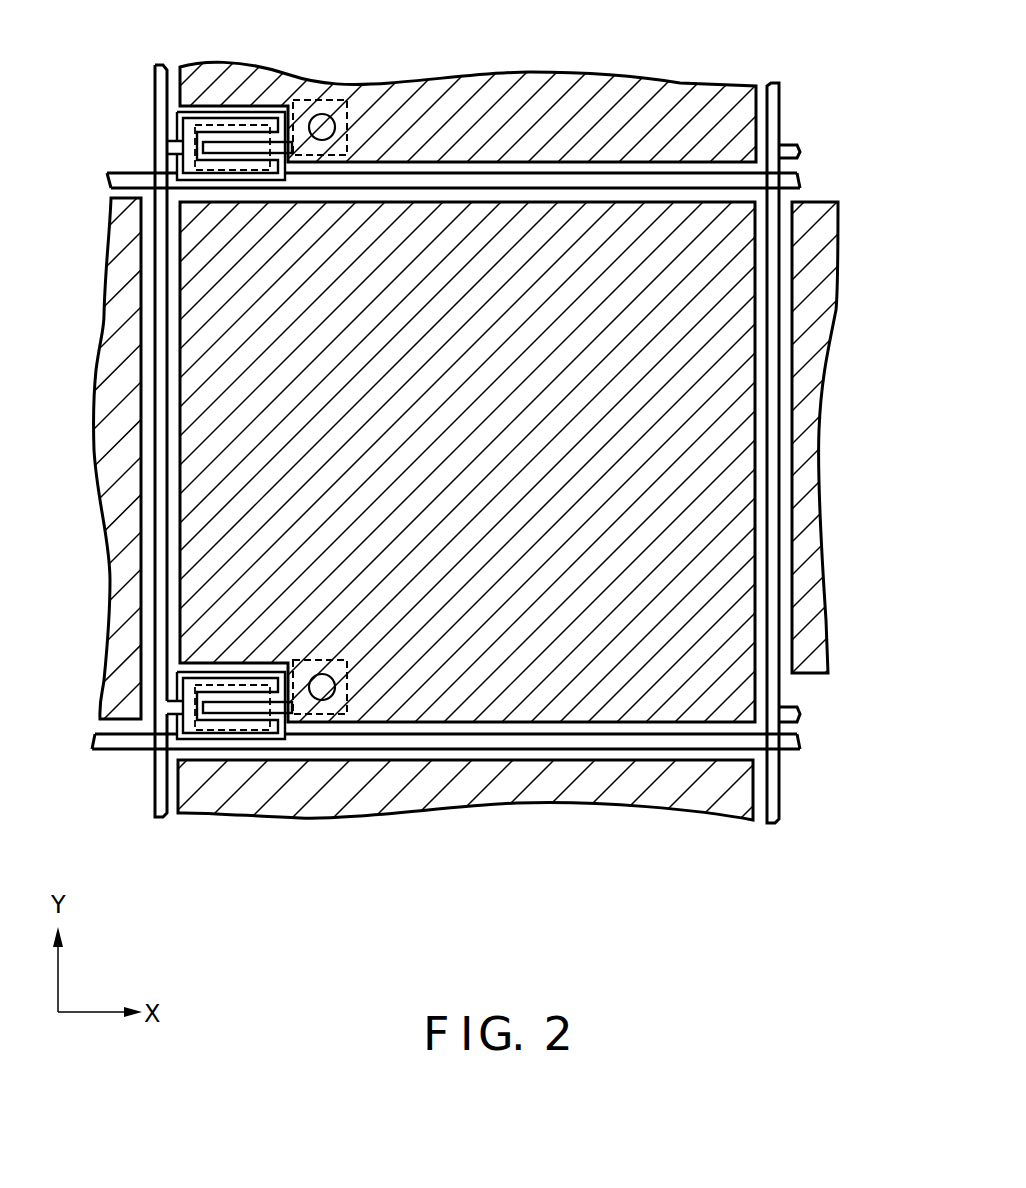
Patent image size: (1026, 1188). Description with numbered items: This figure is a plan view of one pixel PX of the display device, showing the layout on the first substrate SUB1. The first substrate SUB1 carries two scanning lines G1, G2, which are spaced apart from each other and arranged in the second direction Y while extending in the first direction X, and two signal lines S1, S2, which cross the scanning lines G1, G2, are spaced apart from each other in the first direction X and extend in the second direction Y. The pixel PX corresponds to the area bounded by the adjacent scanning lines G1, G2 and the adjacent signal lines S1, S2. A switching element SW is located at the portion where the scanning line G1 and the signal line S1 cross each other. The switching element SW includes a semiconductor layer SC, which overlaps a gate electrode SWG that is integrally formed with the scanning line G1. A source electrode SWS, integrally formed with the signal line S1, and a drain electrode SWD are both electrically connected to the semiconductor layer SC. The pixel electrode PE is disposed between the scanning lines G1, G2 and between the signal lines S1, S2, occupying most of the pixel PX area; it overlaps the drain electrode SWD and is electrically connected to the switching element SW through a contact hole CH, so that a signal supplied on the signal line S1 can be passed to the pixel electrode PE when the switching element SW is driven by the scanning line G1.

The first substrate SUB1 is at (810, 75).
The pixel PX is at (716, 261).
The pixel electrode PE is at (698, 423).
The signal line S1 is at (156, 778).
The signal line S2 is at (780, 779).
The scanning line G1 is at (559, 750).
The scanning line G2 is at (707, 182).
The switching element SW is at (280, 750).
The gate electrode SWG is at (222, 671).
The semiconductor layer SC is at (176, 688).
The source electrode SWS is at (207, 736).
The drain electrode SWD is at (238, 708).
The contact hole CH is at (336, 680).